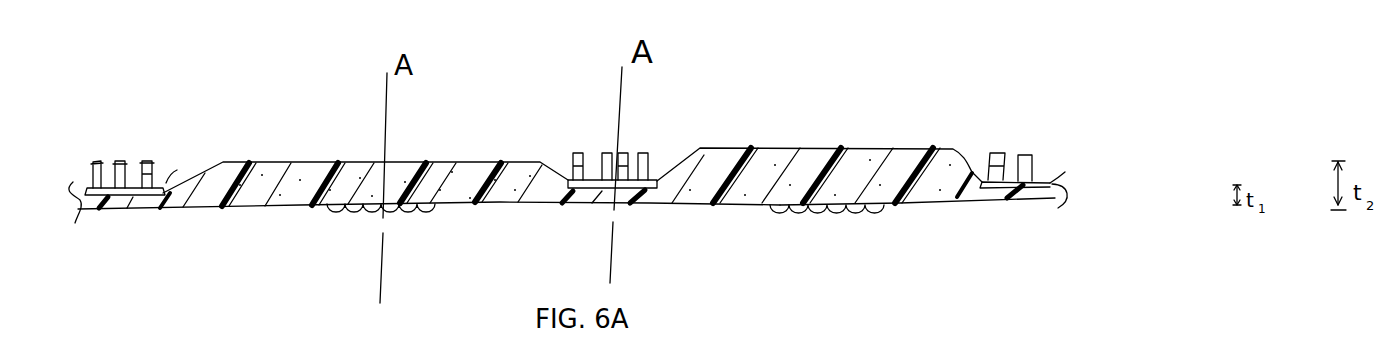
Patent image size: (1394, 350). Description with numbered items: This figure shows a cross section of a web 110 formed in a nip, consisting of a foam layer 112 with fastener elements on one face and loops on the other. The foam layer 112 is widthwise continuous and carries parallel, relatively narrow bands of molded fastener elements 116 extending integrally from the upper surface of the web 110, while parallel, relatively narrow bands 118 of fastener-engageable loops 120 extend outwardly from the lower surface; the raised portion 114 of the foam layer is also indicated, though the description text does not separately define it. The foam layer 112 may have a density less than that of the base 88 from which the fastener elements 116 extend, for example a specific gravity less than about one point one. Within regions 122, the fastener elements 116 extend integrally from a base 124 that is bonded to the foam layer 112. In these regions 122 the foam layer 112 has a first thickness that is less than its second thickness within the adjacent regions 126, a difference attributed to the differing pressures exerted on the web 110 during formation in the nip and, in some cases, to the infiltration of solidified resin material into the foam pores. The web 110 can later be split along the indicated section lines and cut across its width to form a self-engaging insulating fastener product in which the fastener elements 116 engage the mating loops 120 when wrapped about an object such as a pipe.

The web 110 is at (1140, 104).
The foam layer 112 is at (908, 160).
The raised portion of substrate 114 is at (676, 142).
The fastener elements 116 is at (125, 162).
The bands 118 is at (852, 223).
The fastener-engageable loops 120 is at (880, 213).
The regions 122 is at (562, 137).
The base 124 is at (587, 188).
The adjacent regions 126 is at (537, 144).
The base 88 is at (186, 167).